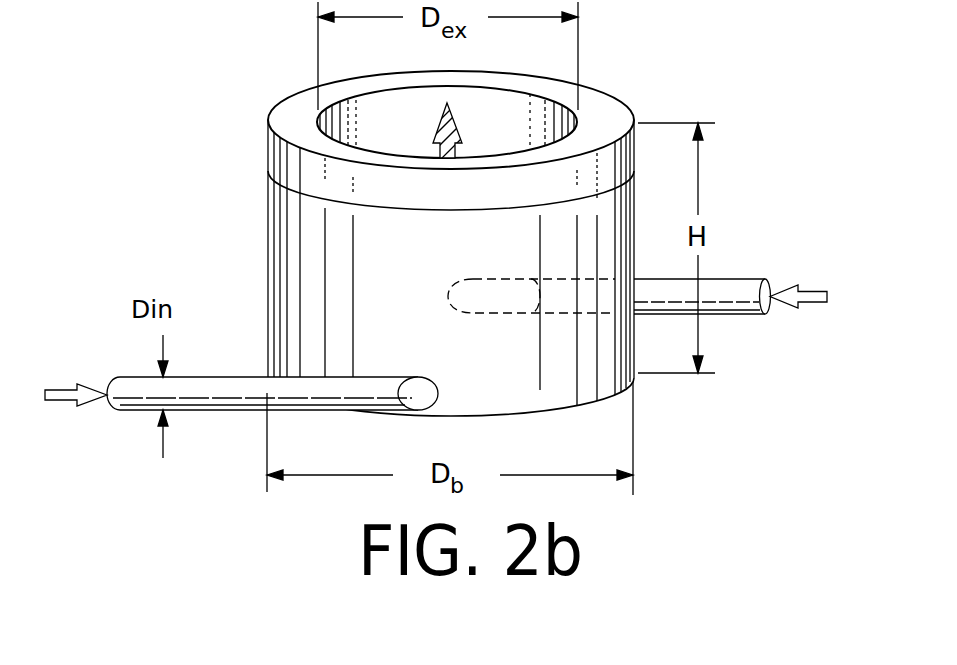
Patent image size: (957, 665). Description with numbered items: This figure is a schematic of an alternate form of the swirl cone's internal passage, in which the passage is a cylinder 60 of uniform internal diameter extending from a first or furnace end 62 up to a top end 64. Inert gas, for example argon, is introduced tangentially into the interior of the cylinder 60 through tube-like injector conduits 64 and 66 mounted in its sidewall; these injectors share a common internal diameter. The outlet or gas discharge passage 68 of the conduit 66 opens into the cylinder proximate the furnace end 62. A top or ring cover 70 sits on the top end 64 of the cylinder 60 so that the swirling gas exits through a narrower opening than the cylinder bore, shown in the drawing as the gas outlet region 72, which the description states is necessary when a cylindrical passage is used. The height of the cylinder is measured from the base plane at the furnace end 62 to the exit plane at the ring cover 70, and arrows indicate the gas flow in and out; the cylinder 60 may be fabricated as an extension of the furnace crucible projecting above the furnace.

The cylinder 60 is at (266, 220).
The first or furnace end 62 is at (591, 400).
The top end 64 is at (212, 412).
The conduit 66 is at (742, 279).
The outlet or gas discharge passage 68 is at (476, 278).
The top or ring cover 70 is at (636, 147).
The gas outlet opening 72 is at (505, 92).